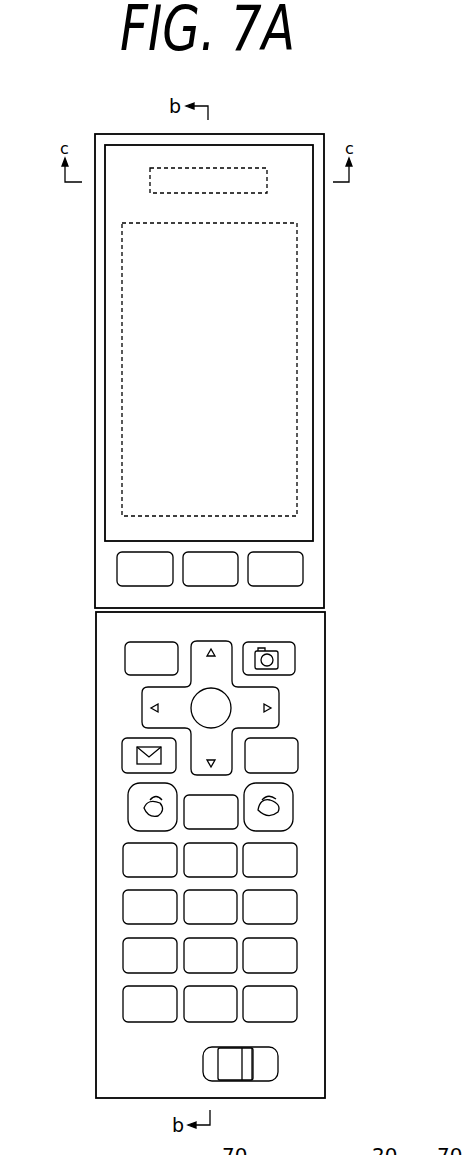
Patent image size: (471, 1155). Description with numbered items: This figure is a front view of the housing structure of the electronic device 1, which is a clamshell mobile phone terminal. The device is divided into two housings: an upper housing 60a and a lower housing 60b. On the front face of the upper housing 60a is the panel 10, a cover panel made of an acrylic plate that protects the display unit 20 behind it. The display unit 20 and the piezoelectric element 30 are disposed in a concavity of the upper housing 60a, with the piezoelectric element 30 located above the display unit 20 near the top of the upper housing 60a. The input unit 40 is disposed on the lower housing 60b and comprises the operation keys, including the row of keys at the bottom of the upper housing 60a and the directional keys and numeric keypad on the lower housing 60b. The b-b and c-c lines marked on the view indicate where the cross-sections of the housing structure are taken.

The electronic device 1 is at (162, 124).
The panel 10 is at (230, 145).
The display unit 20 is at (251, 323).
The piezoelectric element 30 is at (257, 167).
The input unit 40 is at (283, 570).
The upper housing 60a is at (94, 285).
The lower housing 60b is at (94, 757).